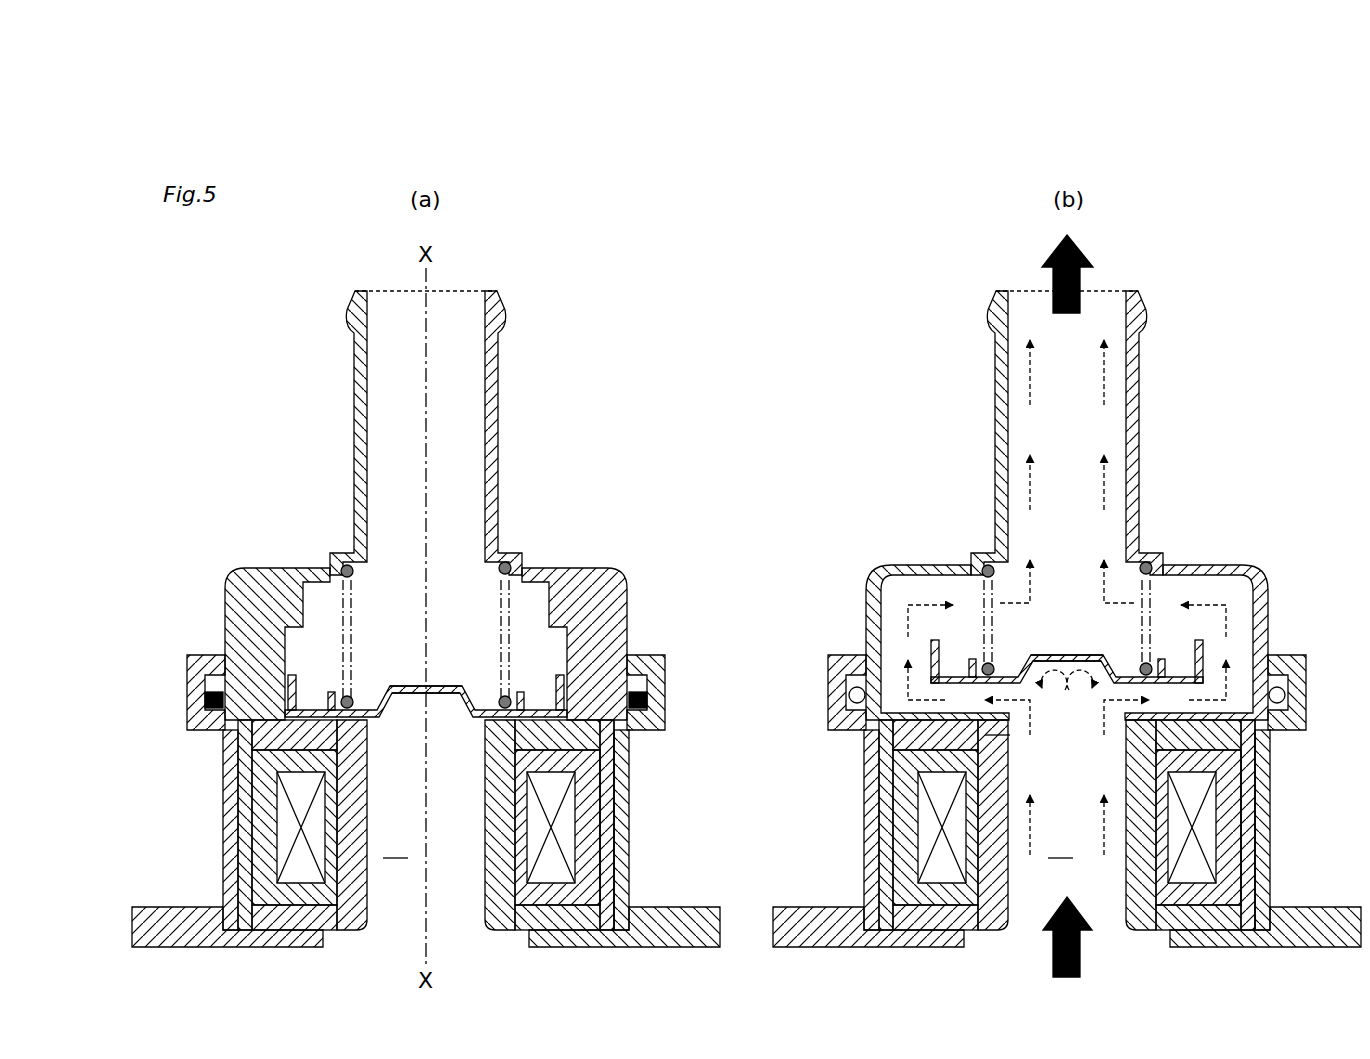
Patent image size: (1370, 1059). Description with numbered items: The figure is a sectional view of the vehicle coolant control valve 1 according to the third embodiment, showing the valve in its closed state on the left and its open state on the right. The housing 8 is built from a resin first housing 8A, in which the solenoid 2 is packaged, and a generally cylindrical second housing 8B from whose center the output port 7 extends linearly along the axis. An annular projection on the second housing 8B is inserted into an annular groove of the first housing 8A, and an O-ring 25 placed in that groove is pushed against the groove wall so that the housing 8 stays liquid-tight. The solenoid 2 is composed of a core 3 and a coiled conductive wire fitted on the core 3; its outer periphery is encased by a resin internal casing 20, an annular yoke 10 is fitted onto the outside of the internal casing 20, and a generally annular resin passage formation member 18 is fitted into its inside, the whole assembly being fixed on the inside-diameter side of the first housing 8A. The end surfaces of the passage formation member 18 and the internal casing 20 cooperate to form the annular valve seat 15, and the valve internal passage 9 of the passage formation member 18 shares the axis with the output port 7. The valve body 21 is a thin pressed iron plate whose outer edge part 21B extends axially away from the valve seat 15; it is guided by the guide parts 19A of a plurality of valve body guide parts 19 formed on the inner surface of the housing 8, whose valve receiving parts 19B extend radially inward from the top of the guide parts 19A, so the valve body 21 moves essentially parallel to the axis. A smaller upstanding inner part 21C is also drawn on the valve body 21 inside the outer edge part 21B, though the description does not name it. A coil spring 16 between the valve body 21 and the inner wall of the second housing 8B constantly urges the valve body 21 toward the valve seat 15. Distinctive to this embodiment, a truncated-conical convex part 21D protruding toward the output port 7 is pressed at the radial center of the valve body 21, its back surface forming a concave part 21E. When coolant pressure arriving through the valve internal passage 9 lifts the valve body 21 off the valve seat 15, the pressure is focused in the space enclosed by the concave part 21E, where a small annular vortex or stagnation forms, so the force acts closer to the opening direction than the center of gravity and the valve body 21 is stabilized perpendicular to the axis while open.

The vehicle coolant control valve 1 is at (322, 482).
The solenoid 2 is at (300, 832).
The core 3 is at (560, 828).
The output port 7 is at (497, 435).
The housing 8 is at (665, 702).
The first housing 8A is at (690, 905).
The second housing 8B is at (578, 566).
The valve internal passage 9 is at (728, 845).
The yoke 10 is at (628, 772).
The valve seat 15 is at (997, 748).
The coil spring 16 is at (498, 572).
The passage formation member 18 is at (460, 905).
The valve body guide part 19 is at (245, 600).
The guide part 19A is at (344, 565).
The valve receiving part 19B is at (566, 643).
The internal casing 20 is at (620, 842).
The valve body 21 is at (557, 667).
The outer edge part 21B is at (300, 690).
The inner flange of valve plate 21C is at (519, 690).
The convex part 21D is at (410, 686).
The concave part 21E is at (443, 698).
The O-ring 25 is at (205, 698).